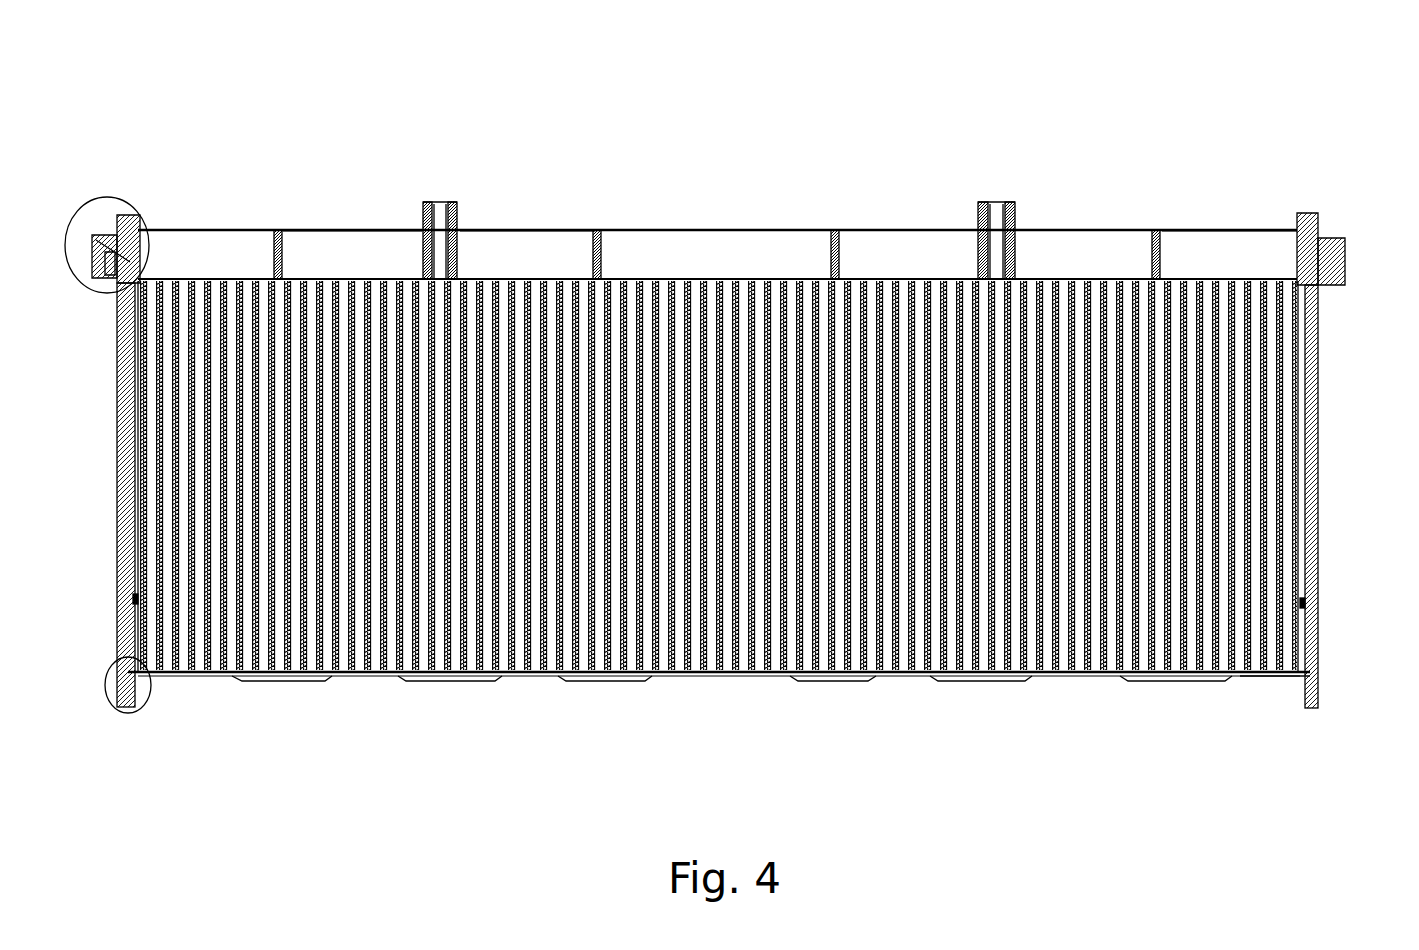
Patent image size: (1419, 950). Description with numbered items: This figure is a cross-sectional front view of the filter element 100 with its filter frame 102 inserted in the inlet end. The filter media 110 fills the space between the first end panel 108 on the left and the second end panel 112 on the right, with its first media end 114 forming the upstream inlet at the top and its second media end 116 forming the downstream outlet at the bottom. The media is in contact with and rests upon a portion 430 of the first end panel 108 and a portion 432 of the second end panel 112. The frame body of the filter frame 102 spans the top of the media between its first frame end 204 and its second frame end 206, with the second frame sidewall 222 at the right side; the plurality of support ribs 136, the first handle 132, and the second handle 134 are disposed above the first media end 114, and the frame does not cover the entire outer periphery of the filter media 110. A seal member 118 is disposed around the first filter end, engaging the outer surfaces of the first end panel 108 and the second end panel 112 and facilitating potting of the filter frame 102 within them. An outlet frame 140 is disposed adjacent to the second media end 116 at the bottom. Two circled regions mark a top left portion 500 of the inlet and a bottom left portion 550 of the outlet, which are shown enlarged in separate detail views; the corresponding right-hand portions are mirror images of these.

The filter element 100 is at (172, 60).
The filter frame 102 is at (529, 226).
The first end panel 108 is at (118, 481).
The filter media 110 is at (1170, 680).
The second end panel 112 is at (1316, 518).
The first media end 114 is at (704, 275).
The second media end 116 is at (721, 678).
The seal member 118 is at (1347, 258).
The first handle 132 is at (437, 202).
The second handle 134 is at (998, 202).
The support ribs 136 is at (1162, 247).
The outlet frame 140 is at (872, 680).
The first frame end 204 is at (316, 226).
The second frame end 206 is at (226, 276).
The second frame sidewall 222 is at (1259, 250).
The portion of the first end panel 430 is at (118, 601).
The portion of the second end panel 432 is at (1316, 601).
The top left portion 500 is at (88, 193).
The bottom left portion 550 is at (98, 708).